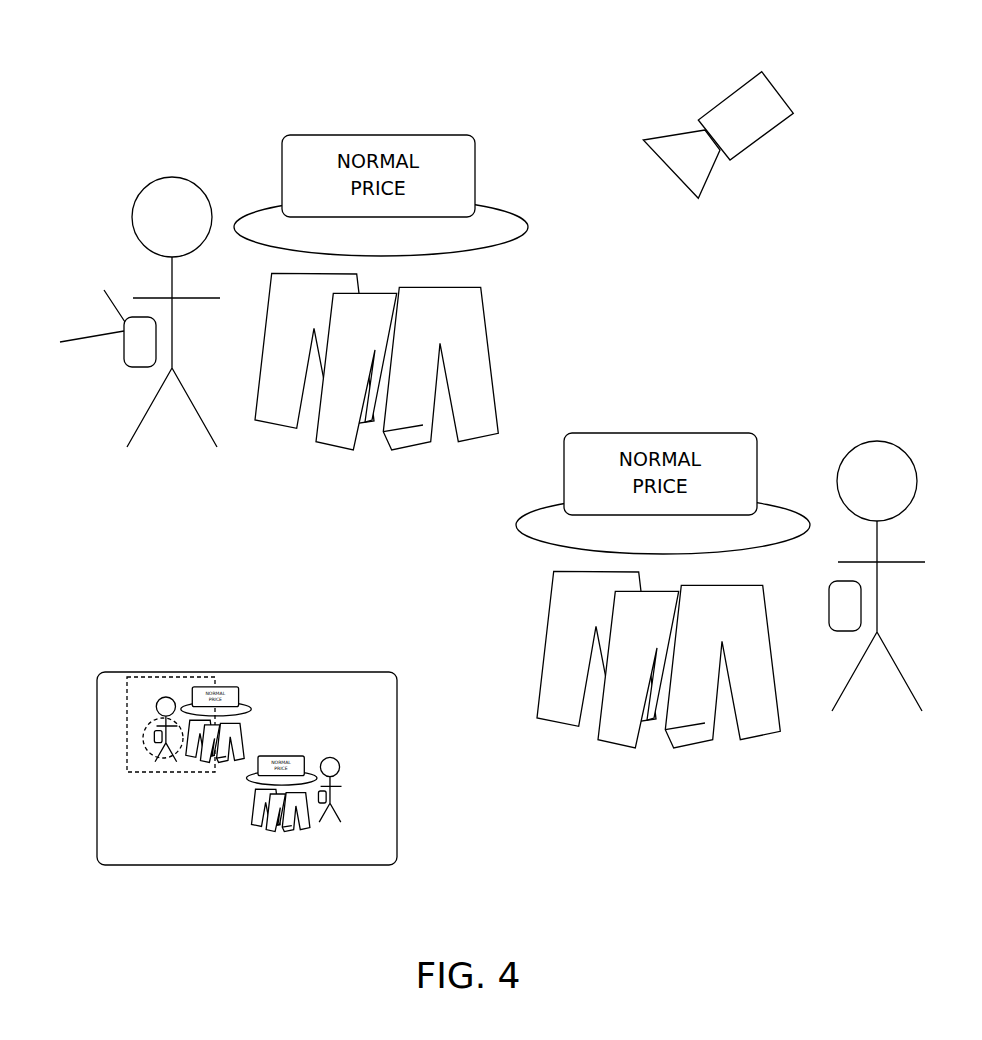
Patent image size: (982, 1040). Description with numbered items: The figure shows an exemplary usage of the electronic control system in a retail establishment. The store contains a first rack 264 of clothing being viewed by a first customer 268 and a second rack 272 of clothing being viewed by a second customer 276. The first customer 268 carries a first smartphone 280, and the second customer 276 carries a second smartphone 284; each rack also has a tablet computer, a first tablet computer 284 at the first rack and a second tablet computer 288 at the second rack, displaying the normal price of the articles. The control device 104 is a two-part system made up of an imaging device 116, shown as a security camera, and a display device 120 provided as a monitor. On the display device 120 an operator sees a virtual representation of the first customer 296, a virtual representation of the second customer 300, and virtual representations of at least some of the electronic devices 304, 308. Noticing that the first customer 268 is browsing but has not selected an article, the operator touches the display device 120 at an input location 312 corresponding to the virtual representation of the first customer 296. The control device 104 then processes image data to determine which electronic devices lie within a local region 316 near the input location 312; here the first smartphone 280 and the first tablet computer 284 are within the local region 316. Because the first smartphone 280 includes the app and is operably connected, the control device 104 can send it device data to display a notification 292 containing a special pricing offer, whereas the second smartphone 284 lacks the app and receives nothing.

The control device 104 is at (281, 740).
The imaging device 116 is at (728, 97).
The display device 120 is at (322, 672).
The first rack 264 is at (419, 270).
The first customer 268 is at (172, 177).
The second rack 272 is at (626, 566).
The second customer 276 is at (897, 442).
The first smartphone 280 is at (137, 373).
The first tablet computer 284 is at (423, 134).
The second tablet computer 288 is at (652, 432).
The notification 292 is at (16, 279).
The virtual representation of the first customer 296 is at (162, 697).
The virtual representation of the second customer 300 is at (341, 773).
The virtual representation of electronic device 304 is at (237, 695).
The virtual representation of electronic device 308 is at (257, 767).
The input location 312 is at (145, 758).
The local region 316 is at (148, 672).